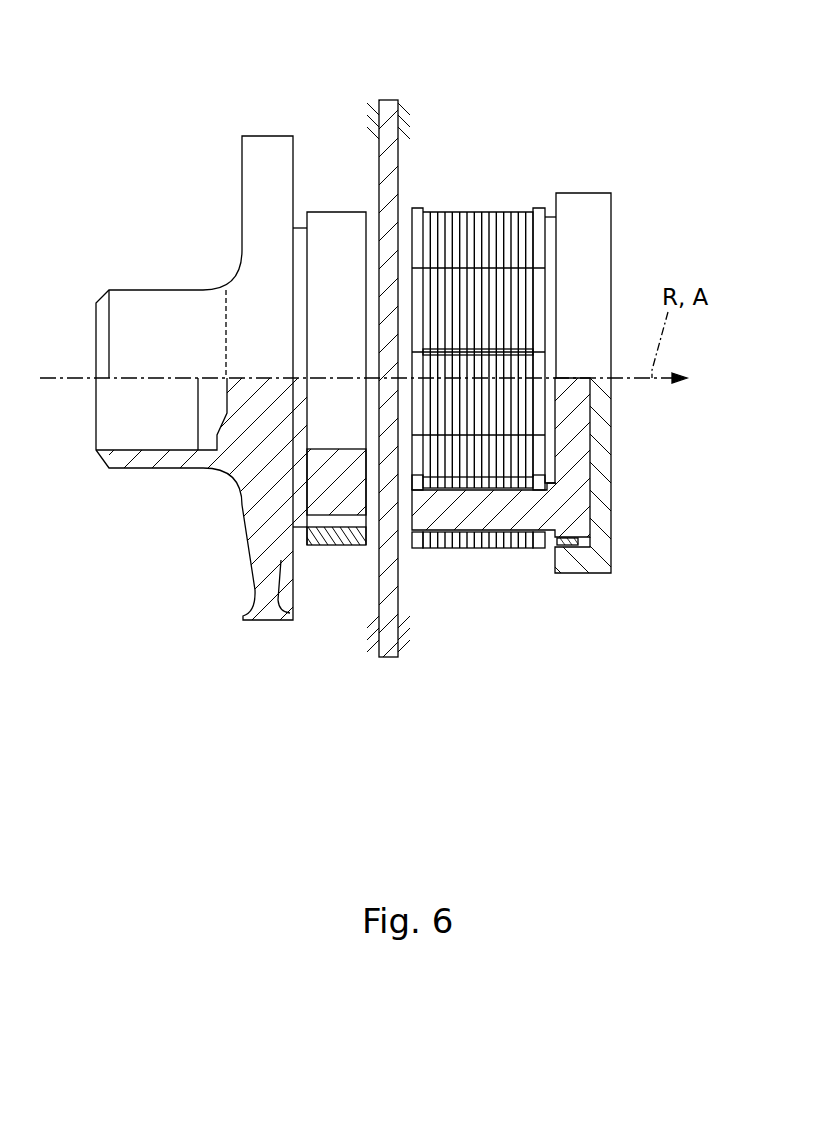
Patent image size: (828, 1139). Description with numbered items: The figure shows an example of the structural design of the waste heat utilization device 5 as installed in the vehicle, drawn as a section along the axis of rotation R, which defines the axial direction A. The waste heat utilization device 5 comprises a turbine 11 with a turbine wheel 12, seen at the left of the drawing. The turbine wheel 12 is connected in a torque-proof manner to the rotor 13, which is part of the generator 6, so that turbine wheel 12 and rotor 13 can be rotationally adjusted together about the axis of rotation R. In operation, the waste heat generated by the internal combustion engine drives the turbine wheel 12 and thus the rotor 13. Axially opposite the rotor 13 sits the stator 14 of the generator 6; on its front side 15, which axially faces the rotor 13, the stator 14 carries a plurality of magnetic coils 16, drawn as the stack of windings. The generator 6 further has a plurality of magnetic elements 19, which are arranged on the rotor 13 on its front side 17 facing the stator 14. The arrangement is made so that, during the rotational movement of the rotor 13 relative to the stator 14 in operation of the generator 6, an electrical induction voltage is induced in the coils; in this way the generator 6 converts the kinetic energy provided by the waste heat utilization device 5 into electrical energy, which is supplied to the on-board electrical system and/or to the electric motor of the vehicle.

The waste heat utilization device 5 is at (180, 158).
The generator 6 is at (592, 150).
The turbine 11 is at (203, 234).
The turbine wheel 12 is at (265, 623).
The rotor 13 is at (331, 150).
The stator 14 is at (510, 190).
The front side 15 is at (402, 238).
The magnetic coils 16 is at (467, 225).
The front side 17 is at (310, 277).
The magnetic elements 19 is at (335, 470).